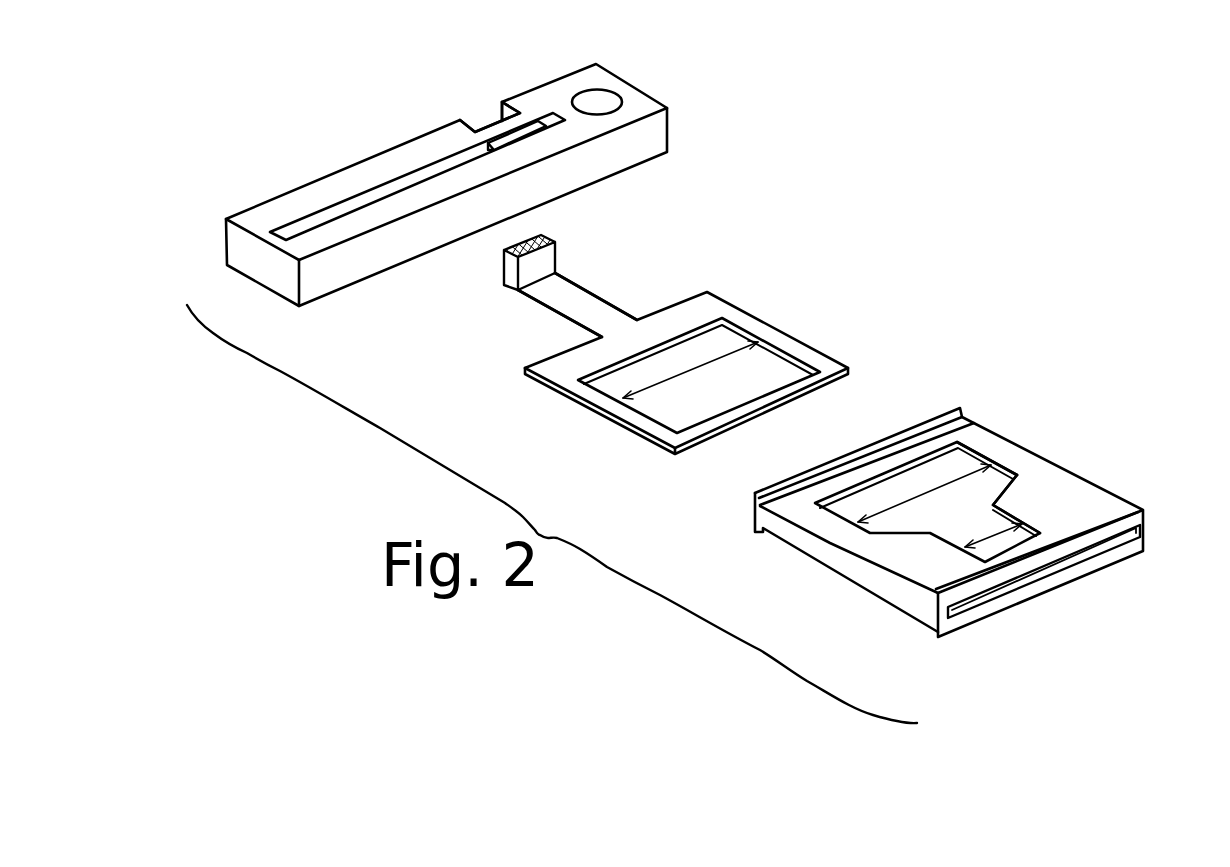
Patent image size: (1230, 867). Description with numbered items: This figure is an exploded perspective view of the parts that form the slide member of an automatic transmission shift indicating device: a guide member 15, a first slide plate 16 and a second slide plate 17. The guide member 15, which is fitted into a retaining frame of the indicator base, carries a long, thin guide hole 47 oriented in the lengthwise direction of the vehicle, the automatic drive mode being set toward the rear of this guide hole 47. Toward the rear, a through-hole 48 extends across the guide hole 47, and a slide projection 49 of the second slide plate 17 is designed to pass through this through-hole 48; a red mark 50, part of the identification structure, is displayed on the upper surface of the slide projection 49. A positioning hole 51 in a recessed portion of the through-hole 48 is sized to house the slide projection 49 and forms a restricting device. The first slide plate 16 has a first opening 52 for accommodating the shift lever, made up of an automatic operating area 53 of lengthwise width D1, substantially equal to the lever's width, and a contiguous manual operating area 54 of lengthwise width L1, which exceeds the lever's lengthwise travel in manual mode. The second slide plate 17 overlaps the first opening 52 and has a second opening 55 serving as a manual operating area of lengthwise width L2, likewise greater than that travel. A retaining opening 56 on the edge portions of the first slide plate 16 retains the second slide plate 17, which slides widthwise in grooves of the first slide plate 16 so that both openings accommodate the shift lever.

The guide member 15 is at (357, 163).
The first slide plate 16 is at (993, 433).
The second slide plate 17 is at (723, 294).
The guide hole 47 is at (352, 203).
The through-hole 48 is at (520, 145).
The slide projection 49 is at (508, 278).
The red mark 50 is at (503, 253).
The positioning hole 51 is at (502, 124).
The first opening 52 is at (1155, 380).
The automatic operating area 53 is at (1022, 524).
The manual operating area 54 is at (993, 465).
The second opening 55 is at (777, 346).
The retaining opening 56 is at (1105, 547).
The width of manual operating area L1 is at (924, 493).
The width of second opening L2 is at (690, 372).
The width of automatic operating area D1 is at (993, 533).